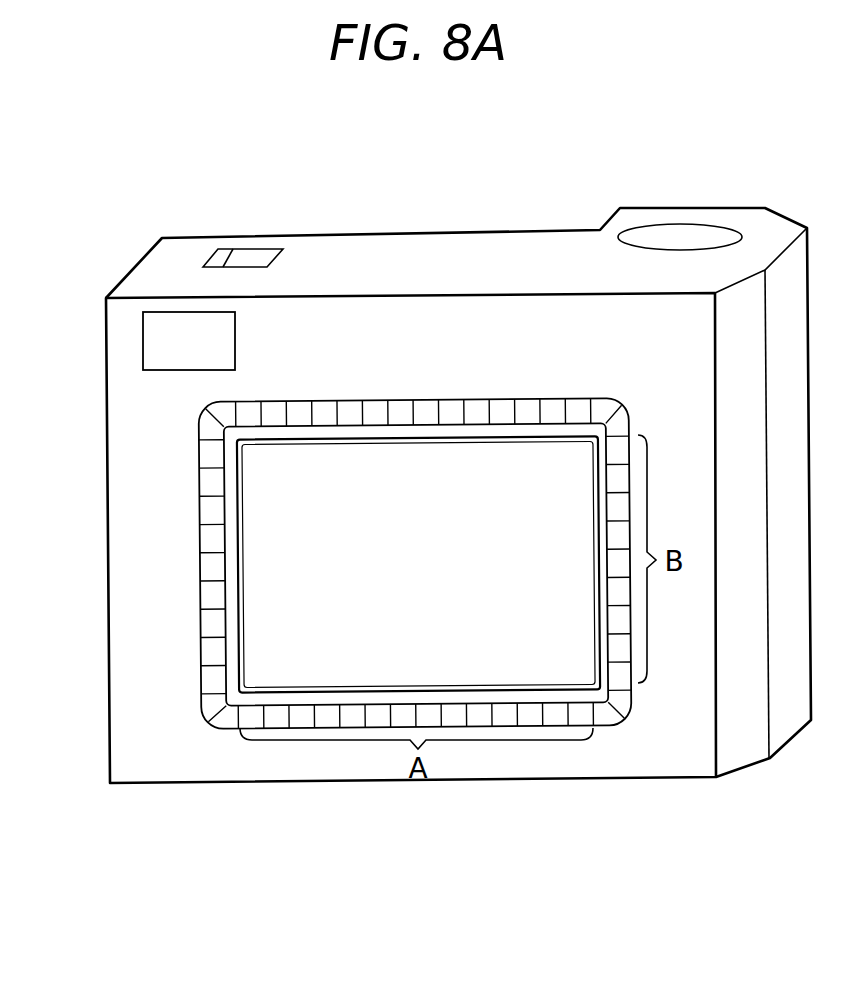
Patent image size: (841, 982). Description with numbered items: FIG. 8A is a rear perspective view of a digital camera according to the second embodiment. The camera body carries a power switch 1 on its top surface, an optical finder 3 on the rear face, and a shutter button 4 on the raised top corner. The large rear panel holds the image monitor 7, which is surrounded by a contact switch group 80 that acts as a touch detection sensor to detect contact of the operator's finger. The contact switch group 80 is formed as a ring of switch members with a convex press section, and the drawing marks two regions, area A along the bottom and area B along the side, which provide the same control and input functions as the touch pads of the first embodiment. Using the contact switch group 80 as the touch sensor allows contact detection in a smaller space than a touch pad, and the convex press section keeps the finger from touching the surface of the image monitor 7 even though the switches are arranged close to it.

The power switch 1 is at (250, 258).
The optical finder 3 is at (143, 340).
The shutter button 4 is at (677, 232).
The image monitor 7 is at (238, 530).
The contact switch group 80 is at (208, 447).